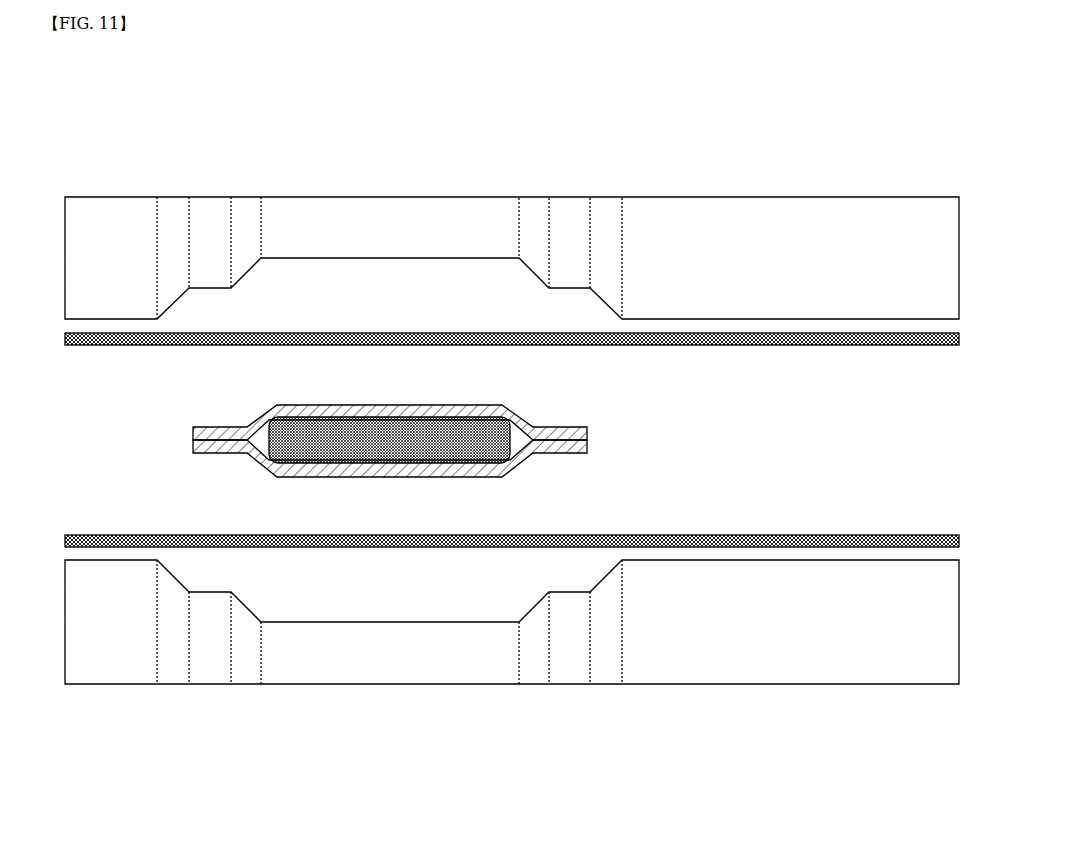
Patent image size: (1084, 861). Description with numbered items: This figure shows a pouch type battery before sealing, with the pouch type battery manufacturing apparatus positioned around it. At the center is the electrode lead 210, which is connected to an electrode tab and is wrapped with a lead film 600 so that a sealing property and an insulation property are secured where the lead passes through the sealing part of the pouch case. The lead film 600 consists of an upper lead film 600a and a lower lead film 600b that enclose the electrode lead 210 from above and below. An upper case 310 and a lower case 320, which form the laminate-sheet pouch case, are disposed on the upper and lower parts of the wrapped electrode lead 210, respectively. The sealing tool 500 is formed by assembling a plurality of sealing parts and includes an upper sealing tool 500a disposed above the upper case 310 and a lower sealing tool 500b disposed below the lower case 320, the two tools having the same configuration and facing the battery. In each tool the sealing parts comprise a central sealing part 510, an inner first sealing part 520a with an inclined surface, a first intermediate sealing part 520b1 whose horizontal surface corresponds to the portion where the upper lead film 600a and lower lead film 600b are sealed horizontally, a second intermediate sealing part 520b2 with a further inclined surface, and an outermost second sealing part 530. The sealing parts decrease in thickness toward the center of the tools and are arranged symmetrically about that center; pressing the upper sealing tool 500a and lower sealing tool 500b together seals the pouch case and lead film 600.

The sealing tool 500 is at (85, 127).
The upper sealing tool 500a is at (727, 182).
The lower sealing tool 500b is at (725, 698).
The second sealing part 530 is at (99, 210).
The 1-2-2 sealing part 520b2 is at (173, 210).
The 1-2-1 sealing part 520b1 is at (212, 210).
The 1-1 sealing part 520a is at (245, 210).
The central sealing part 510 is at (313, 210).
The upper case 310 is at (800, 347).
The lower case 320 is at (849, 533).
The lead film 600 is at (456, 441).
The upper lead film 600a is at (589, 430).
The lower lead film 600b is at (427, 458).
The electrode lead 210 is at (428, 453).